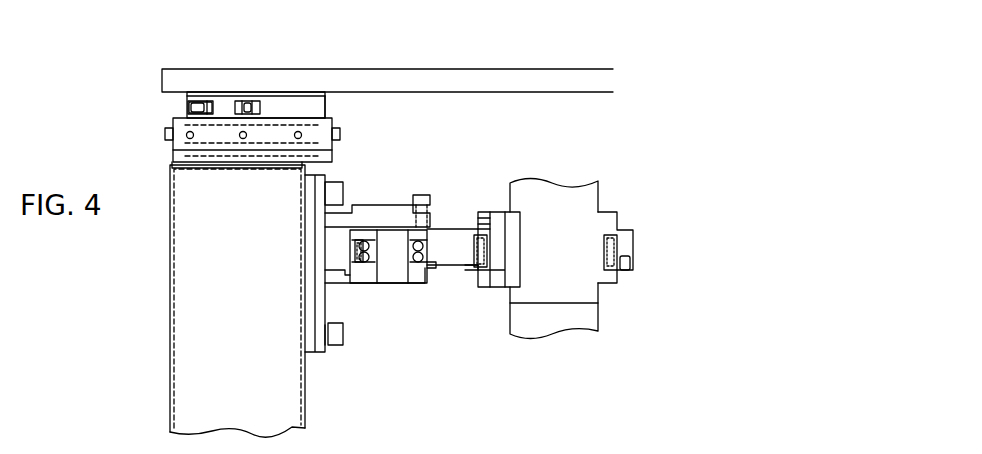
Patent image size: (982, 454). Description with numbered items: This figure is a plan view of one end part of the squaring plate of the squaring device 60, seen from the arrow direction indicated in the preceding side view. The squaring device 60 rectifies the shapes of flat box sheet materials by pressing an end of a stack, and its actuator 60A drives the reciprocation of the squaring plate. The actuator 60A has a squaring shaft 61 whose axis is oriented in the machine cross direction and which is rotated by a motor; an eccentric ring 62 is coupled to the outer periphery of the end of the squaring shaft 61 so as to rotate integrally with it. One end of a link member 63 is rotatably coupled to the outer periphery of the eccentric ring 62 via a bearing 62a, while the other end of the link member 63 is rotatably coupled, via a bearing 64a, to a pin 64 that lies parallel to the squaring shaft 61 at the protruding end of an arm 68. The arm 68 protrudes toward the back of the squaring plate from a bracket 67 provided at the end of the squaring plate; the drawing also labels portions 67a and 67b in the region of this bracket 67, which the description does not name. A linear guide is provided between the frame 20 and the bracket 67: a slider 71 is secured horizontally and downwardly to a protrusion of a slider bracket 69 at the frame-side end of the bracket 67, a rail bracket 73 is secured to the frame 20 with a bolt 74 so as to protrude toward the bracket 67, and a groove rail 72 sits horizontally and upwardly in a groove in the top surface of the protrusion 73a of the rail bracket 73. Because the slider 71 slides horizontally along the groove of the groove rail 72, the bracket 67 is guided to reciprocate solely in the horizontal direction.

The frame 20 is at (499, 69).
The squaring device 60 is at (587, 251).
The actuator 60A is at (401, 243).
The squaring shaft 61 is at (598, 193).
The eccentric ring 62 is at (503, 212).
The bearing 62a is at (633, 241).
The link member 63 is at (457, 230).
The pin 64 is at (392, 283).
The bearing 64a is at (370, 237).
The bracket 67 is at (170, 228).
The support plate 67a is at (318, 353).
The fixing bolt 67b is at (345, 336).
The arm 68 is at (342, 213).
The slider bracket 69 is at (173, 150).
The slider 71 is at (254, 163).
The groove rail 72 is at (224, 106).
The rail bracket 73 is at (318, 98).
The protrusion 73a is at (327, 108).
The bolt 74 is at (187, 108).